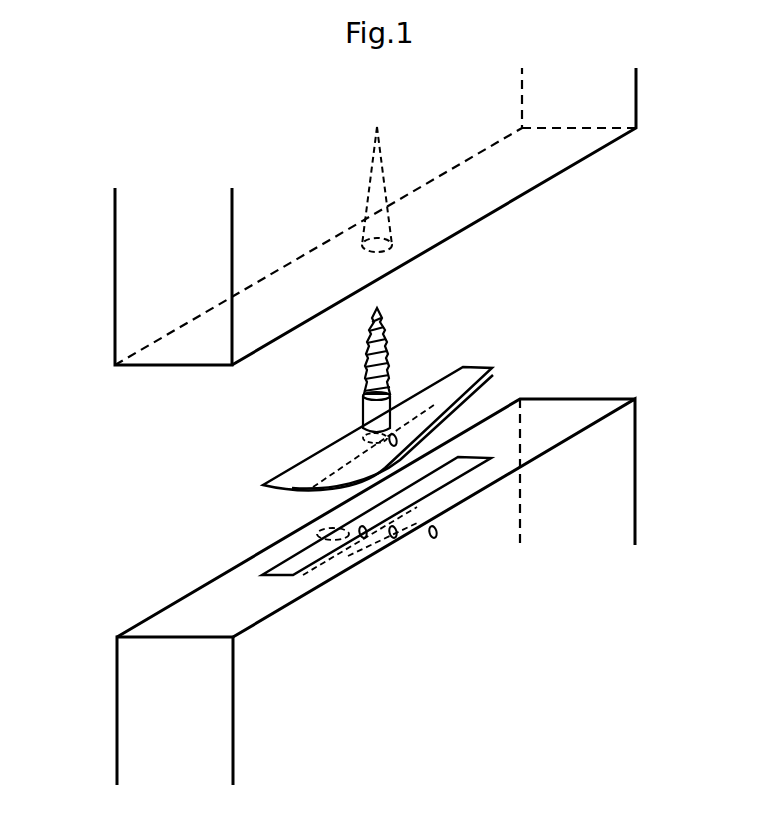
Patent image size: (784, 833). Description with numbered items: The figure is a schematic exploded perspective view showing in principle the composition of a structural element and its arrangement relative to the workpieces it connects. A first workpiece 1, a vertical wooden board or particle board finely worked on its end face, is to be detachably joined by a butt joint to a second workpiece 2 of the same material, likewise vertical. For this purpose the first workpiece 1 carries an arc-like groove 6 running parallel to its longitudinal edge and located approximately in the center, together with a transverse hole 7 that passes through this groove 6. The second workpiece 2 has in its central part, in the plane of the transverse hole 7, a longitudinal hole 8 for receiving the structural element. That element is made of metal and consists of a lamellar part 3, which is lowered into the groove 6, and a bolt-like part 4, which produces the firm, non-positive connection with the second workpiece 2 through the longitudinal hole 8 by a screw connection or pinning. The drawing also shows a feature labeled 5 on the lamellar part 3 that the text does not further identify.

The first workpiece 1 is at (635, 495).
The second workpiece 2 is at (637, 98).
The lamellar part 3 is at (285, 470).
The bolt-like part 4 is at (358, 410).
The hole 5 is at (397, 437).
The arc-like groove 6 is at (438, 519).
The transverse hole 7 is at (438, 537).
The longitudinal hole 8 is at (363, 232).